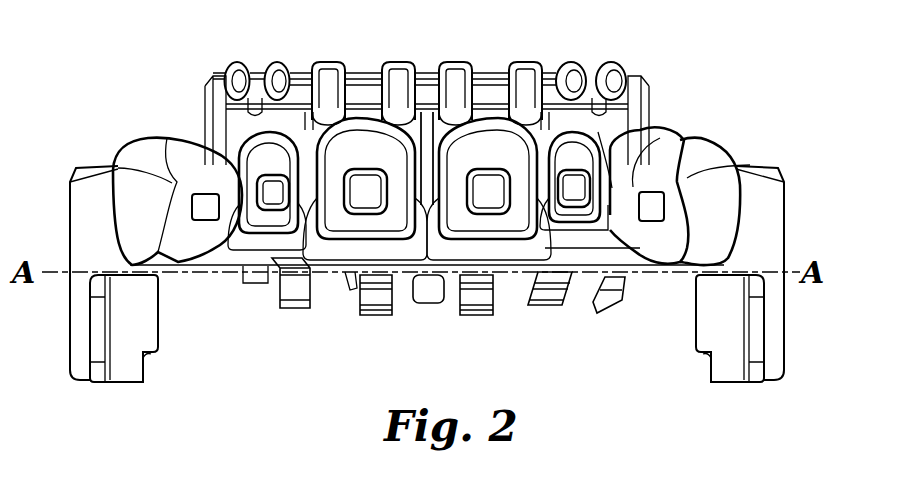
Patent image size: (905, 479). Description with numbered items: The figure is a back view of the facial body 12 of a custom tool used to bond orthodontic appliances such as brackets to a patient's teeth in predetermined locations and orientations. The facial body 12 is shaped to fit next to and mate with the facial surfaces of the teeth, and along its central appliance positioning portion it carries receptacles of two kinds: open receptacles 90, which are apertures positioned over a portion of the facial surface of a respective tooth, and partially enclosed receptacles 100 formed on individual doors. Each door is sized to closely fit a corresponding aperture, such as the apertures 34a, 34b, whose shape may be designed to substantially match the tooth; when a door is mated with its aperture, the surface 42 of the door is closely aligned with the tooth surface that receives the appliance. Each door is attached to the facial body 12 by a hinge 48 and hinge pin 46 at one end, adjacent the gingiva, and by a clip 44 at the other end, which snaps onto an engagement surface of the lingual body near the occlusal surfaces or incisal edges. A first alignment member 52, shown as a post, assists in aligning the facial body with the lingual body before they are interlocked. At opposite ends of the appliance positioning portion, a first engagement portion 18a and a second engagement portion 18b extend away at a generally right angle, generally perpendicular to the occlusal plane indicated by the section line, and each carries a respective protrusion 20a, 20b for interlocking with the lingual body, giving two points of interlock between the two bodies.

The facial body 12 is at (774, 59).
The first engagement portion 18a is at (121, 384).
The second engagement portion 18b is at (712, 384).
The protrusion 20a is at (146, 338).
The protrusion 20b is at (700, 346).
The aperture 34a is at (470, 247).
The aperture 34b is at (565, 216).
The surface of the door 42 is at (388, 220).
The clip 44 is at (370, 298).
The hinge pin 46 is at (360, 84).
The hinge 48 is at (526, 70).
The first alignment member 52 is at (430, 292).
The open receptacle 90 is at (203, 202).
The partially enclosed receptacle 100 is at (270, 188).